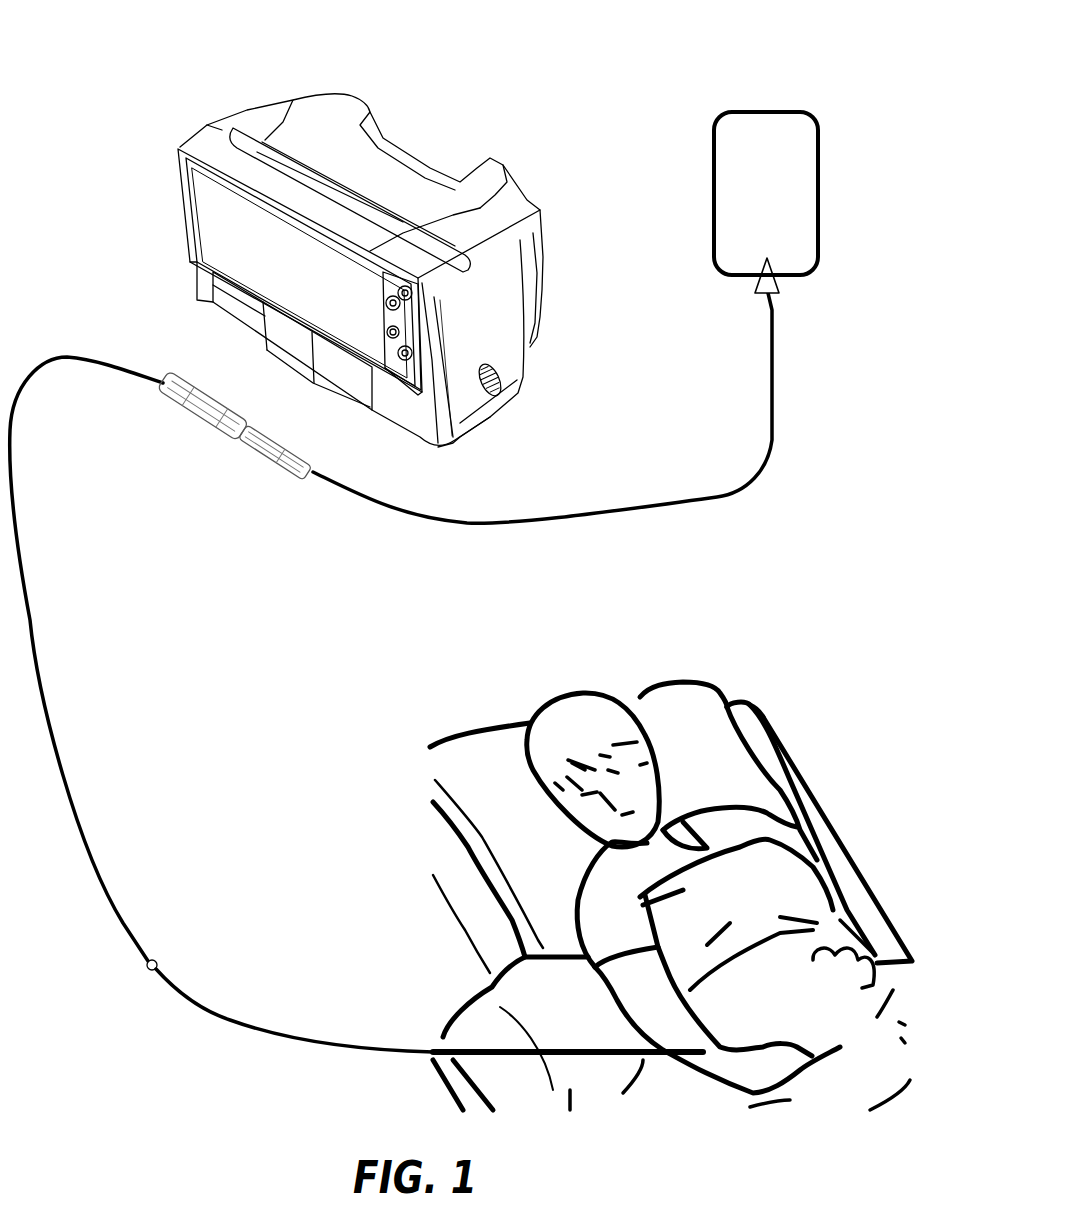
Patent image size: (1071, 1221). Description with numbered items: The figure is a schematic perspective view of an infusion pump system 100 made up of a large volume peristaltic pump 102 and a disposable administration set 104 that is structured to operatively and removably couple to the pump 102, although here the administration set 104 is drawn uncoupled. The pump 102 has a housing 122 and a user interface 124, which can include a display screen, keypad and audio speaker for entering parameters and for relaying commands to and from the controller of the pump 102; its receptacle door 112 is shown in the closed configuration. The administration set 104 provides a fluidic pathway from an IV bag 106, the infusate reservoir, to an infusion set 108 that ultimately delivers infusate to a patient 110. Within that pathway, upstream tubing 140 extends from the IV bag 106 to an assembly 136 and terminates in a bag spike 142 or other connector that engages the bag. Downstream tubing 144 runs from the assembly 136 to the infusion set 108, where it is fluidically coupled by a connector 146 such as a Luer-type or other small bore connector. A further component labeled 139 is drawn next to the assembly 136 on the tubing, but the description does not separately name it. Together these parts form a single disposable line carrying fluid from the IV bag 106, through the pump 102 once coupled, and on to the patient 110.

The infusion pump system 100 is at (105, 50).
The large volume peristaltic pump 102 is at (367, 237).
The administration set 104 is at (438, 655).
The IV bag 106 is at (806, 193).
The infusion set 108 is at (429, 1008).
The patient 110 is at (671, 896).
The receptacle door 112 is at (249, 341).
The housing 122 is at (523, 291).
The user interface 124 is at (338, 225).
The assembly 136 is at (203, 447).
The connector plug 139 is at (272, 469).
The upstream tubing 140 is at (542, 448).
The bag spike 142 is at (810, 309).
The downstream tubing 144 is at (86, 659).
The connector 146 is at (193, 929).